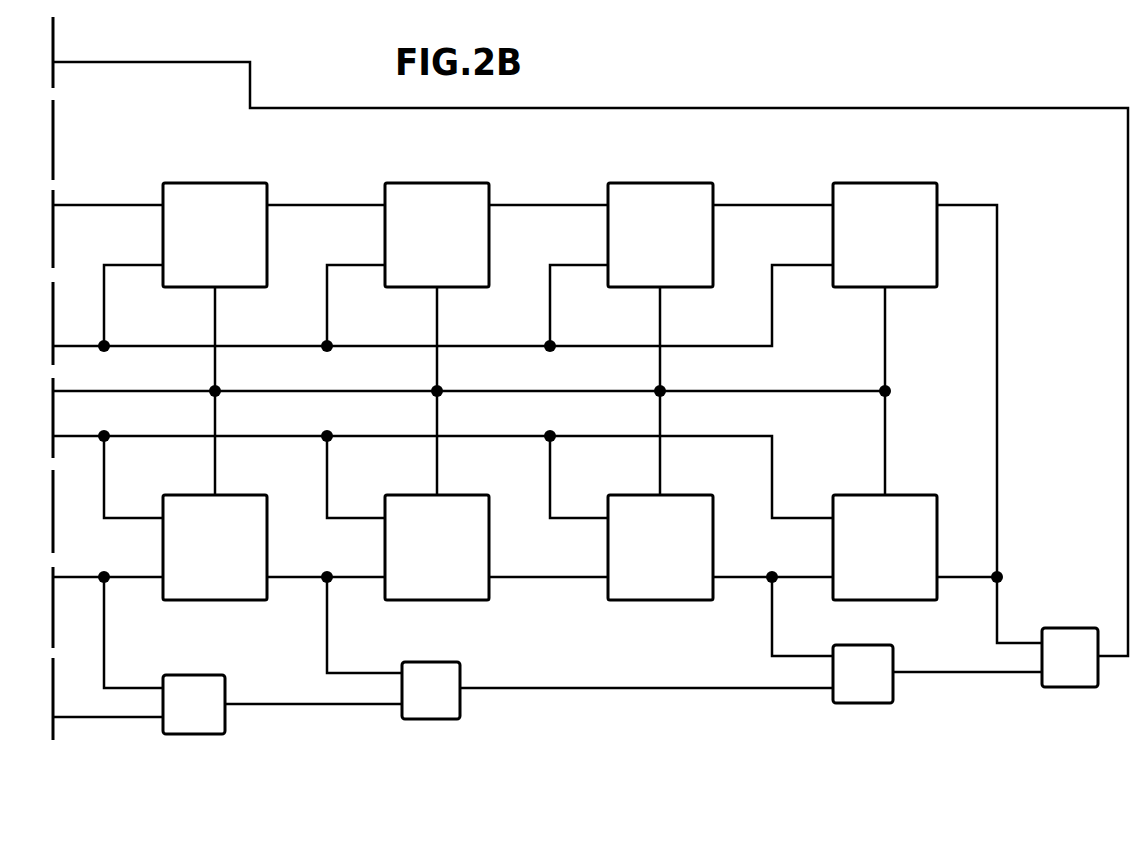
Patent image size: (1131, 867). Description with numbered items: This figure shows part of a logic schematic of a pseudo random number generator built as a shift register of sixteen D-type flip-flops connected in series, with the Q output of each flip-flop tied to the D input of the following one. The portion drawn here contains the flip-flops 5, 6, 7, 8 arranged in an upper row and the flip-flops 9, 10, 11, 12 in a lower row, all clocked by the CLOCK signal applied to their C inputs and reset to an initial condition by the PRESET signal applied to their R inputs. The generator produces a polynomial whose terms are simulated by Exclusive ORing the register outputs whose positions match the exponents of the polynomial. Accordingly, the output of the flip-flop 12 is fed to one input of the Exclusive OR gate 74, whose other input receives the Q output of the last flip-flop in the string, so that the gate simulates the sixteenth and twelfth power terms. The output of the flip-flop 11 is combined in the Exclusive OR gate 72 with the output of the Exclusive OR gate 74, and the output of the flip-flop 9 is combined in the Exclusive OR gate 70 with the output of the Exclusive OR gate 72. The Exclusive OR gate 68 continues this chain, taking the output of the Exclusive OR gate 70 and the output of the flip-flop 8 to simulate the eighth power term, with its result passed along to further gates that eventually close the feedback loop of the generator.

The D-type flip-flop 5 is at (215, 236).
The D-type flip-flop 6 is at (437, 236).
The D-type flip-flop 7 is at (660, 236).
The D-type flip-flop 8 is at (885, 236).
The D-type flip-flop 9 is at (885, 547).
The D-type flip-flop 10 is at (660, 547).
The D-type flip-flop 11 is at (437, 547).
The D-type flip-flop 12 is at (215, 547).
The Exclusive OR gate 68 is at (1048, 634).
The Exclusive OR gate 70 is at (885, 659).
The Exclusive OR gate 72 is at (458, 672).
The Exclusive OR gate 74 is at (193, 681).